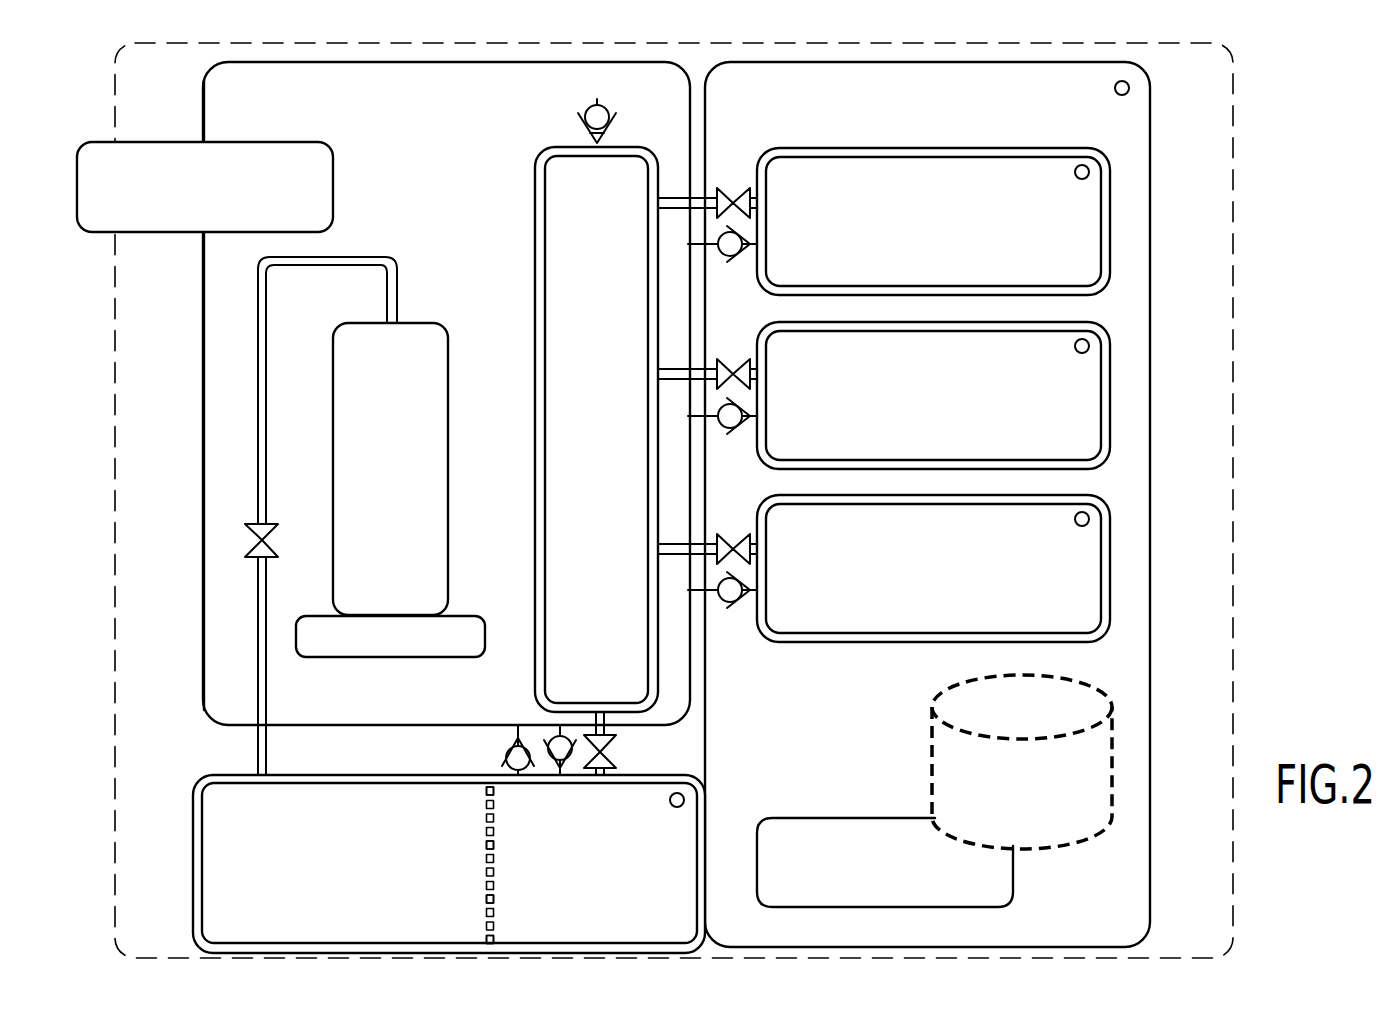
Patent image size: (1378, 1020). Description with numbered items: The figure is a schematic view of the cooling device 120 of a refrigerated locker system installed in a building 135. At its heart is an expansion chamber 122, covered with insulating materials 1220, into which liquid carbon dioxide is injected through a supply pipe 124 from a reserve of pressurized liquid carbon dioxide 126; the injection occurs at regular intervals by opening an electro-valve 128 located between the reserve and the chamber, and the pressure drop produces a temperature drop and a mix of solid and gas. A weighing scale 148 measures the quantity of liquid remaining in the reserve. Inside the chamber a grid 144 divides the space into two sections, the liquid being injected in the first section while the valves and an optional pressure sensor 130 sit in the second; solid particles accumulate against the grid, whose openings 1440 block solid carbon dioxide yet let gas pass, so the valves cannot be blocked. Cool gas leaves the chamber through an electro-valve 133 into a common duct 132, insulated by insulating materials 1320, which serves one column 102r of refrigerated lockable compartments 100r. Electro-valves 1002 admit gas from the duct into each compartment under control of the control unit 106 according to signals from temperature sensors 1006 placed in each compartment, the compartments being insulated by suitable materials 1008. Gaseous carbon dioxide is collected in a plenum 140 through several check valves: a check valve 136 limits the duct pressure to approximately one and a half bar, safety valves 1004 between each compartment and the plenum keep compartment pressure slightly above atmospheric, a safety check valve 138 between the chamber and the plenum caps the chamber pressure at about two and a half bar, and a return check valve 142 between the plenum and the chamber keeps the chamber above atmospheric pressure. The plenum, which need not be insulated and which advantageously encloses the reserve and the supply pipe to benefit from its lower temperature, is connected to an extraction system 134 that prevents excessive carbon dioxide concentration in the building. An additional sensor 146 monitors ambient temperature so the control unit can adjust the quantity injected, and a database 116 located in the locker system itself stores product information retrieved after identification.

The refrigerated lockable compartments 100r is at (917, 146).
The column of refrigerated lockable compartments 102r is at (1152, 166).
The electro-valves 1002 is at (740, 198).
The safety valves 1004 is at (726, 250).
The temperature sensors 1006 is at (1080, 180).
The insulating materials 1008 is at (1110, 210).
The control unit 106 is at (849, 877).
The database 116 is at (1010, 796).
The cooling device 120 is at (158, 429).
The expansion chamber 122 is at (183, 850).
The insulating materials 1220 is at (200, 891).
The supply pipe 124 is at (258, 498).
The reserve of pressurized liquid CO2 126 is at (372, 477).
The electro-valve 128 is at (277, 530).
The pressure sensor 130 is at (675, 808).
The common duct 132 is at (535, 357).
The insulating materials 1320 is at (541, 241).
The electro-valve 133 is at (614, 759).
The extraction system 134 is at (185, 200).
The building 135 is at (113, 568).
The check valve 136 is at (590, 121).
The safety check valve 138 is at (556, 736).
The plenum 140 is at (203, 371).
The return check valve 142 is at (505, 761).
The grid 144 is at (478, 854).
The openings 1440 is at (495, 873).
The additional sensor 146 is at (1120, 96).
The weighing scale 148 is at (365, 649).